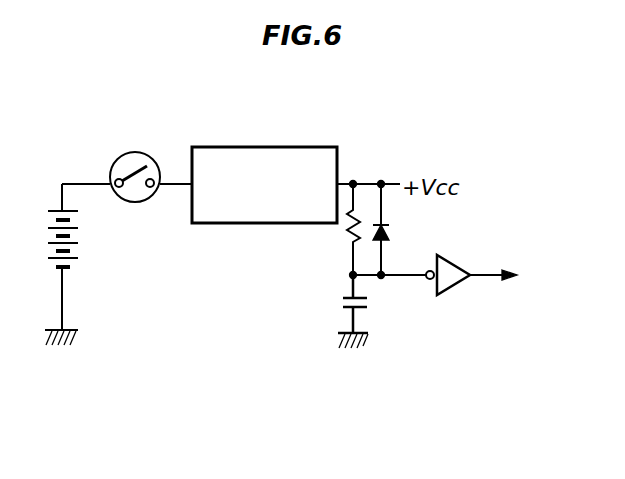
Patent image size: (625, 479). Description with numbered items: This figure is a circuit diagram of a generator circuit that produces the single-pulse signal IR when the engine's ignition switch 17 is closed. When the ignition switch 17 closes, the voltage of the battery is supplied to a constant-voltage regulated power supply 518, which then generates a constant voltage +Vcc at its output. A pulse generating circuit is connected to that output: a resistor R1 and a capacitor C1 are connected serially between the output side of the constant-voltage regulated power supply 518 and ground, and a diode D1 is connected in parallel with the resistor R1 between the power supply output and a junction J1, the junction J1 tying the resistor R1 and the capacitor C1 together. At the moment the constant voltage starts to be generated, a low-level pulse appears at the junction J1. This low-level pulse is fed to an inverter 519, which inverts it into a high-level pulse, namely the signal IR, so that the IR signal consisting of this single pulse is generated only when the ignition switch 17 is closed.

The ignition switch 17 is at (137, 152).
The constant-voltage regulated power supply 518 is at (283, 147).
The inverter 519 is at (451, 291).
The resistor R1 is at (338, 229).
The diode D1 is at (399, 229).
The capacitor C1 is at (341, 311).
The junction J1 is at (334, 276).